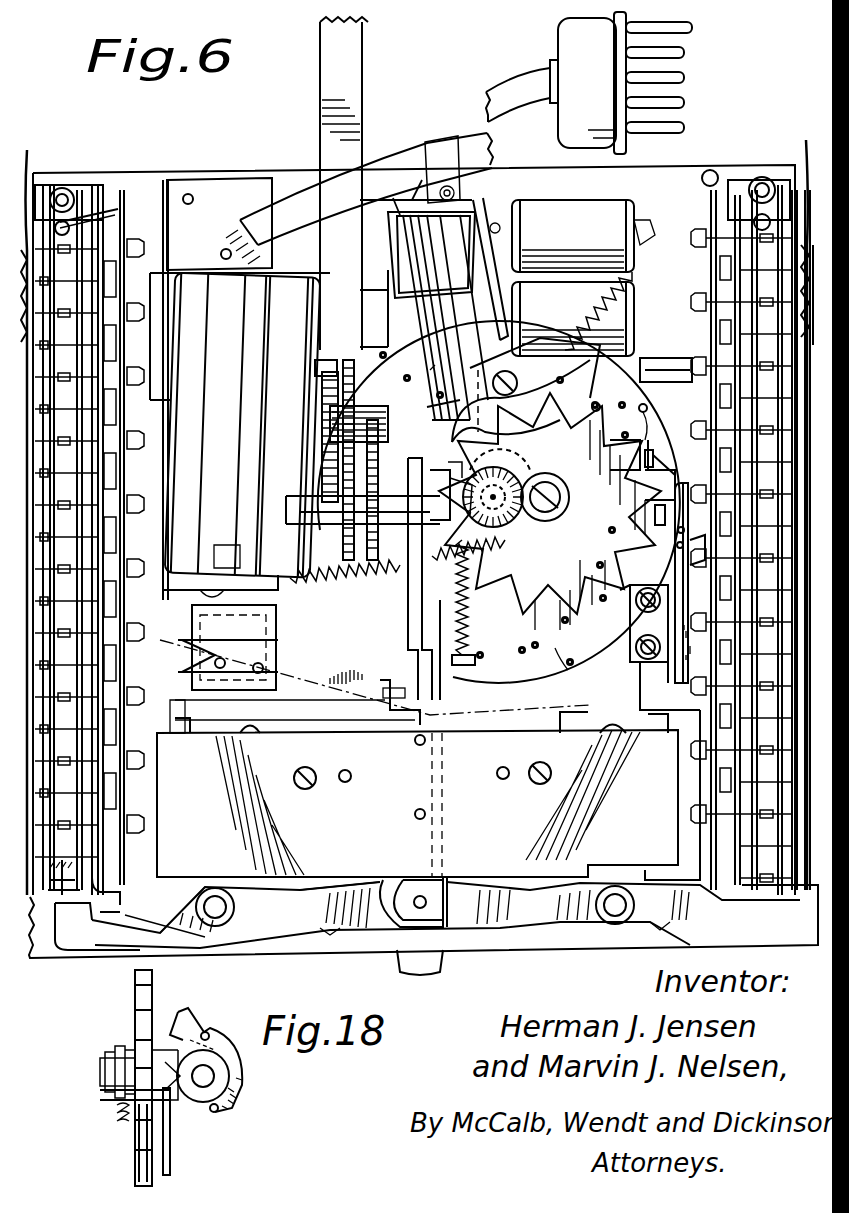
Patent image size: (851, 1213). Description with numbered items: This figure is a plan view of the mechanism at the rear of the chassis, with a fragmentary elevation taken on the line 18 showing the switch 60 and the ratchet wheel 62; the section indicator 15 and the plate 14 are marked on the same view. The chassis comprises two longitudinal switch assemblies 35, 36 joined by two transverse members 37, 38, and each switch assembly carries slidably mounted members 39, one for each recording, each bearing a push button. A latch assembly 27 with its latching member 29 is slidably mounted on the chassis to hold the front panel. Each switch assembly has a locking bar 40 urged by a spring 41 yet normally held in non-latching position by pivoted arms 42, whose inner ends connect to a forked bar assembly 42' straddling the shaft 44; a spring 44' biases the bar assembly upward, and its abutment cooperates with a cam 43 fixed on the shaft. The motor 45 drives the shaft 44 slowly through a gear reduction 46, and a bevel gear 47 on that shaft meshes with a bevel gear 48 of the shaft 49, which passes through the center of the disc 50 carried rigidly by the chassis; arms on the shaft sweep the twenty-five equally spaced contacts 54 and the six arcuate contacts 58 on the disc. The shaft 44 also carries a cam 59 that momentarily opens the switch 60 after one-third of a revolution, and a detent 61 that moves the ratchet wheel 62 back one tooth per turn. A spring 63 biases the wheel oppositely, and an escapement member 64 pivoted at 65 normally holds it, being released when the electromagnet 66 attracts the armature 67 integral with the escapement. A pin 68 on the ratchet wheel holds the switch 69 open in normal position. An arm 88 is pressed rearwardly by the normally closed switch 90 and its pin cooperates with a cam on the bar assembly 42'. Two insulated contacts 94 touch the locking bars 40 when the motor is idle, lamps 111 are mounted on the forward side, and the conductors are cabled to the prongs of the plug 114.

In FIG. 6, the pivoted plate / section line 14 is at (148, 650).
In FIG. 6, the section line indicator 15 is at (453, 987).
In FIG. 6, the section line 18 is at (688, 580).
In FIG. 6, the latch assembly 27 is at (365, 88).
In FIG. 6, the latching member 29 is at (446, 966).
In FIG. 6, the longitudinal switch assembly 35 is at (739, 204).
In FIG. 6, the longitudinal switch assembly 36 is at (75, 232).
In FIG. 6, the transverse member 37 is at (285, 180).
In FIG. 6, the transverse member 38 is at (335, 948).
In FIG. 6, the slidable member 39 is at (100, 300).
In FIG. 6, the locking bar 40 is at (70, 870).
In FIG. 6, the spring 41 is at (98, 904).
In FIG. 6, the arm 42 is at (198, 936).
In FIG. 6, the bar assembly 42' is at (466, 663).
In FIG. 6, the cam 43 is at (456, 541).
In FIG. 6, the shaft 44 is at (448, 485).
In FIG. 18, the shaft 44 is at (190, 1093).
In FIG. 6, the spring 44' is at (482, 602).
In FIG. 6, the motor 45 is at (241, 436).
In FIG. 6, the gear reduction 46 is at (388, 427).
In FIG. 6, the bevel gear 47 is at (458, 466).
In FIG. 6, the bevel gear 48 is at (520, 462).
In FIG. 6, the shaft 49 is at (545, 487).
In FIG. 6, the disc 50 is at (400, 362).
In FIG. 6, the contact 54 is at (658, 400).
In FIG. 6, the contact 58 is at (616, 403).
In FIG. 6, the cam 59 is at (680, 480).
In FIG. 18, the cam 59 is at (228, 1104).
In FIG. 6, the switch 60 is at (678, 545).
In FIG. 18, the switch 60 is at (112, 1140).
In FIG. 6, the detent 61 is at (662, 450).
In FIG. 18, the detent 61 is at (186, 1010).
In FIG. 6, the ratchet wheel 62 is at (548, 605).
In FIG. 18, the ratchet wheel 62 is at (135, 997).
In FIG. 6, the spring 63 is at (315, 590).
In FIG. 18, the spring 63 is at (118, 1118).
In FIG. 6, the escapement member 64 is at (521, 401).
In FIG. 6, the pivot 65 is at (535, 385).
In FIG. 6, the electromagnet 66 is at (612, 290).
In FIG. 6, the armature 67 is at (430, 222).
In FIG. 6, the pin 68 is at (478, 478).
In FIG. 6, the switch 69 is at (436, 372).
In FIG. 6, the arm 88 is at (405, 710).
In FIG. 6, the switch 90 is at (320, 682).
In FIG. 6, the insulated contact 94 is at (95, 222).
In FIG. 6, the lamp 111 is at (650, 356).
In FIG. 6, the plug 114 is at (556, 35).